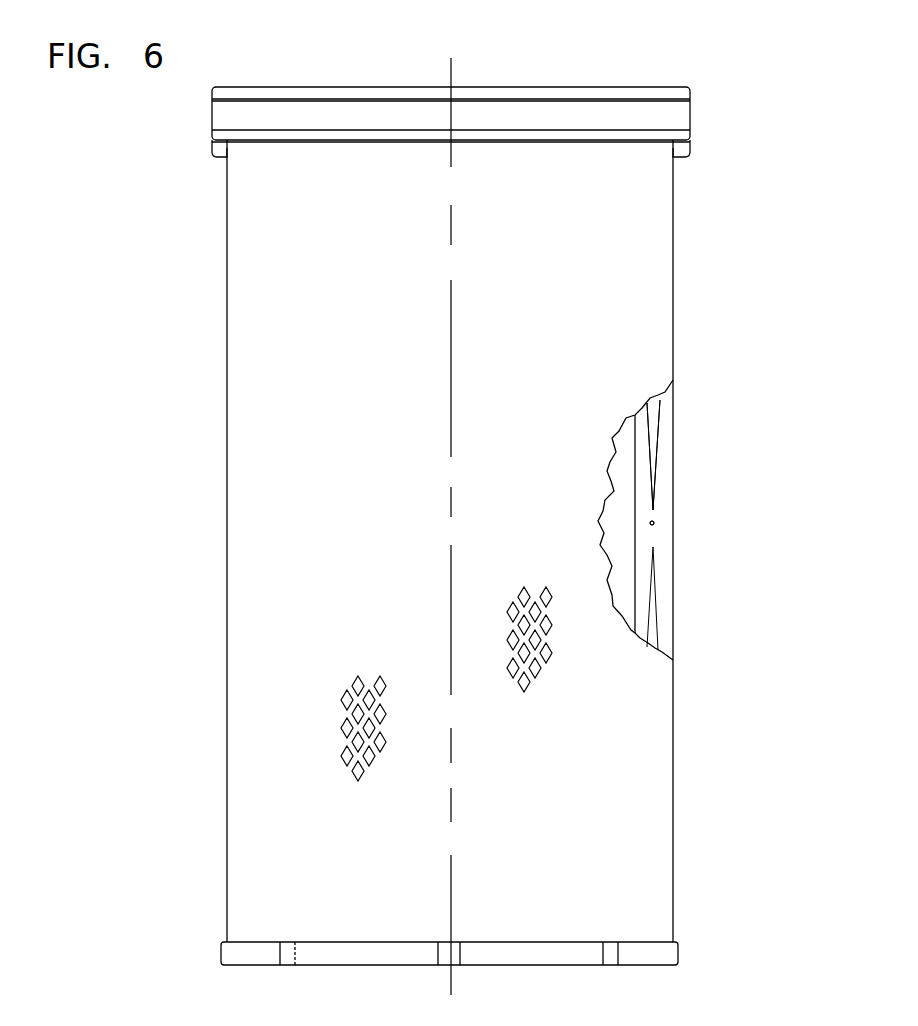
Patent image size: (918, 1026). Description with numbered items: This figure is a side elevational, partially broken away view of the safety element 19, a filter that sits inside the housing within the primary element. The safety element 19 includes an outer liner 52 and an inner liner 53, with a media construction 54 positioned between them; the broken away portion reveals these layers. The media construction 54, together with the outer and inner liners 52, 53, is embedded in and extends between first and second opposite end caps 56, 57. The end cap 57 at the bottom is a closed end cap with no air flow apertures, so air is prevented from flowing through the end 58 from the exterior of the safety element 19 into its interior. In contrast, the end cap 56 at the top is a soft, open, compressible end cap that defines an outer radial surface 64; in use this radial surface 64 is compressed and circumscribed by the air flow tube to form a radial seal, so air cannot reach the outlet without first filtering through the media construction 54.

The safety element 19 is at (313, 78).
The outer liner 52 is at (673, 590).
The inner liner 53 is at (636, 541).
The media construction 54 is at (660, 503).
The first end cap 56 is at (547, 110).
The second end cap 57 is at (678, 955).
The end 58 is at (586, 965).
The outer radial surface 64 is at (212, 118).